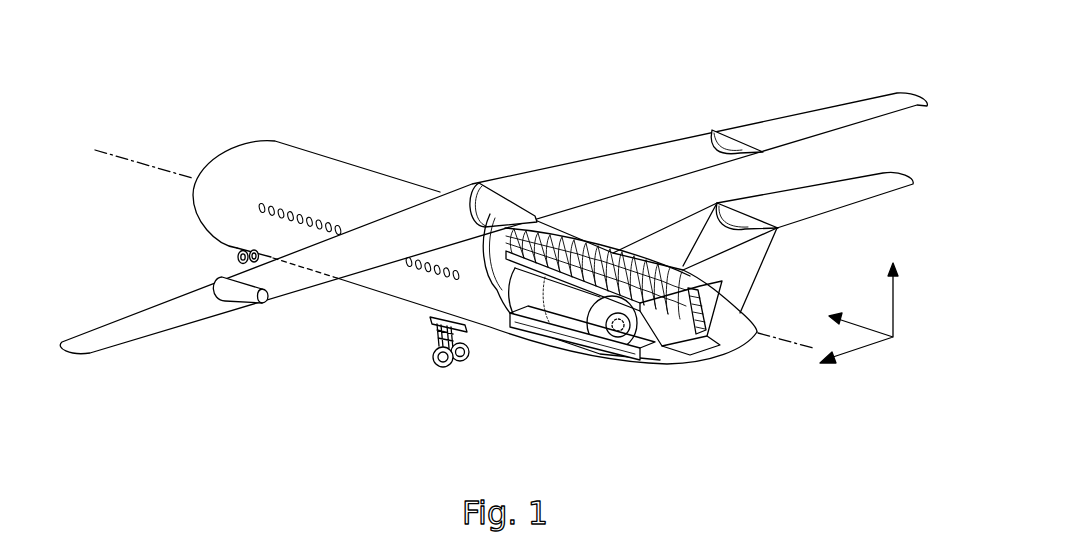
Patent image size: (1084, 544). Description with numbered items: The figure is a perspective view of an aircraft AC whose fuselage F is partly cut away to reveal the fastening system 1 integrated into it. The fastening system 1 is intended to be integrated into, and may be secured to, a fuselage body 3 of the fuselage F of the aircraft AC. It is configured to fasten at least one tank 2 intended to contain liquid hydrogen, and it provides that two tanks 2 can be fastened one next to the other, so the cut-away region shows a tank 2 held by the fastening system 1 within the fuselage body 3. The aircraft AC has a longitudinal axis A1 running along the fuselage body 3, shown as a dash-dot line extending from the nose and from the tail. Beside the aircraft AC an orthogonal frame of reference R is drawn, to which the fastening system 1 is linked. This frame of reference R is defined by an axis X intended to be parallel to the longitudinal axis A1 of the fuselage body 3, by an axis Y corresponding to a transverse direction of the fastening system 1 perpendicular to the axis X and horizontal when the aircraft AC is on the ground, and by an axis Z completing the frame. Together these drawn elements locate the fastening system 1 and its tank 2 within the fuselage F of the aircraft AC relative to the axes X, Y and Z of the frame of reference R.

The aircraft AC is at (493, 249).
The fuselage F is at (403, 181).
The longitudinal axis A1 is at (157, 168).
The fastening system 1 is at (663, 371).
The tank 2 is at (570, 311).
The fuselage body 3 is at (590, 385).
The axis X is at (835, 295).
The axis Y is at (828, 391).
The axis Z is at (913, 263).
The orthogonal frame of reference R is at (879, 351).